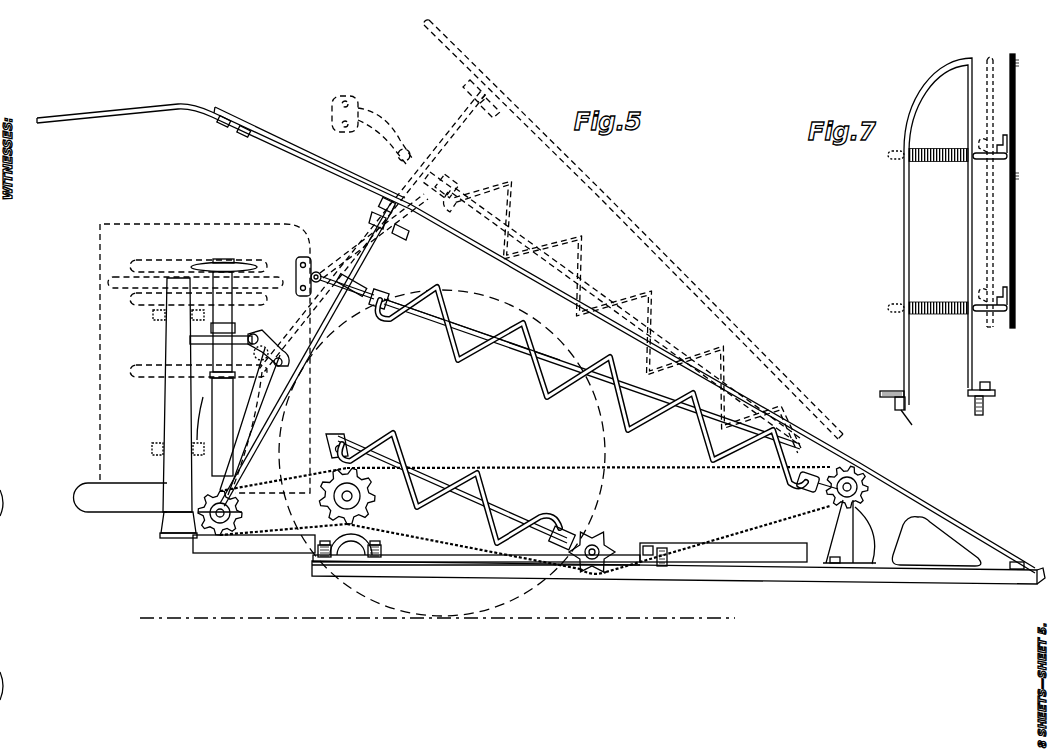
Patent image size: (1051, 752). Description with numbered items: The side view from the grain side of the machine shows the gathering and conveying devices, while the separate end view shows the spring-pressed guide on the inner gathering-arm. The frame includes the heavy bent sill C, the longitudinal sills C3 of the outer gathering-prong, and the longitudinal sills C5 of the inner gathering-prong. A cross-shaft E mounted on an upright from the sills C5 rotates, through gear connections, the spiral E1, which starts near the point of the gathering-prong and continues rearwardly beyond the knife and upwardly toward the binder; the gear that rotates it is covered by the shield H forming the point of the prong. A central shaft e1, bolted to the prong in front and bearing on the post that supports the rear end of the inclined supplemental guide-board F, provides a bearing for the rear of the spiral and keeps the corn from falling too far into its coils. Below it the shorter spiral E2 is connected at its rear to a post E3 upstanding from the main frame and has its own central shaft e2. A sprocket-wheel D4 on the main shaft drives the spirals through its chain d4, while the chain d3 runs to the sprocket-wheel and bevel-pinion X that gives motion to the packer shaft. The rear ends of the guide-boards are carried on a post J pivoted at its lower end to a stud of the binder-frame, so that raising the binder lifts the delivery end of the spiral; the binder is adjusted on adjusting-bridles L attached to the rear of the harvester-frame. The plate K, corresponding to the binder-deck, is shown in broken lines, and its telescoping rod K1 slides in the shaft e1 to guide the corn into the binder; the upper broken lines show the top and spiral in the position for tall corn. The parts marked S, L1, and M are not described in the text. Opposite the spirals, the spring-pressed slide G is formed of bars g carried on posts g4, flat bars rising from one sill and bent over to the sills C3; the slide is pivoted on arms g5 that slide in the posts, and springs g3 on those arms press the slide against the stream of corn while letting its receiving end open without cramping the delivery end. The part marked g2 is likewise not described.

In FIG. 5, the supplemental guide-board F is at (365, 190).
In FIG. 5, the plate K is at (205, 358).
In FIG. 5, the telescoping rod K1 is at (322, 272).
In FIG. 5, the shifting lever bracket S is at (253, 334).
In FIG. 5, the post J is at (310, 352).
In FIG. 5, the adjusting-bridles L is at (240, 402).
In FIG. 5, the strut pivot L1 is at (200, 537).
In FIG. 5, the handle M is at (108, 502).
In FIG. 5, the sprocket-wheel and bevel-pinion X is at (210, 527).
In FIG. 5, the post E3 is at (332, 436).
In FIG. 5, the chain d3 is at (297, 482).
In FIG. 5, the sprocket-wheel D4 is at (364, 500).
In FIG. 5, the central shaft e2 is at (462, 492).
In FIG. 5, the lower spiral E2 is at (545, 524).
In FIG. 5, the central shaft e1 is at (510, 350).
In FIG. 5, the spiral E1 is at (672, 415).
In FIG. 5, the cross-shaft E is at (838, 494).
In FIG. 5, the chain d4 is at (535, 467).
In FIG. 5, the bent sill C is at (680, 543).
In FIG. 5, the shield H is at (854, 515).
In FIG. 5, the longitudinal sills C5 is at (862, 578).
In FIG. 7, the spring-pressed slide G is at (1010, 57).
In FIG. 7, the bars g is at (1016, 64).
In FIG. 7, the springs g3 is at (935, 161).
In FIG. 7, the arms g5 is at (975, 158).
In FIG. 7, the posts g4 is at (904, 240).
In FIG. 7, the sliding rod g2 is at (1000, 327).
In FIG. 7, the longitudinal sills C3 is at (972, 400).